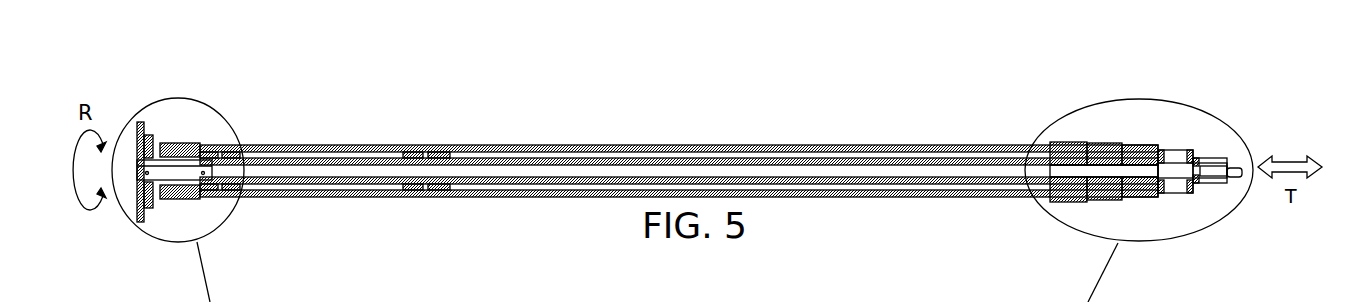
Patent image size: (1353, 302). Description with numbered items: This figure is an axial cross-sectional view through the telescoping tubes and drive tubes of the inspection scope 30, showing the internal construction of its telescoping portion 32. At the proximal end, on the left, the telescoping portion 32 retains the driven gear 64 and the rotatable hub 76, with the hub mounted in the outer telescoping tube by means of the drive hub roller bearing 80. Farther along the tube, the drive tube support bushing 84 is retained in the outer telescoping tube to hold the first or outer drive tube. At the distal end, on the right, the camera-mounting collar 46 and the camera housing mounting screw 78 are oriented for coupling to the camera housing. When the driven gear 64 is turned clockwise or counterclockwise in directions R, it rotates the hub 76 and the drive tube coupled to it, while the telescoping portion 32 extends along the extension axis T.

The inspection scope 30 is at (502, 106).
The telescoping portion 32 is at (684, 132).
The camera-mounting collar 46 is at (1207, 186).
The driven gear 64 is at (142, 121).
The rotatable hub 76 is at (200, 155).
The camera housing mounting screw 78 is at (1240, 173).
The drive hub roller bearing 80 is at (177, 142).
The drive tube support bushing 84 is at (432, 144).